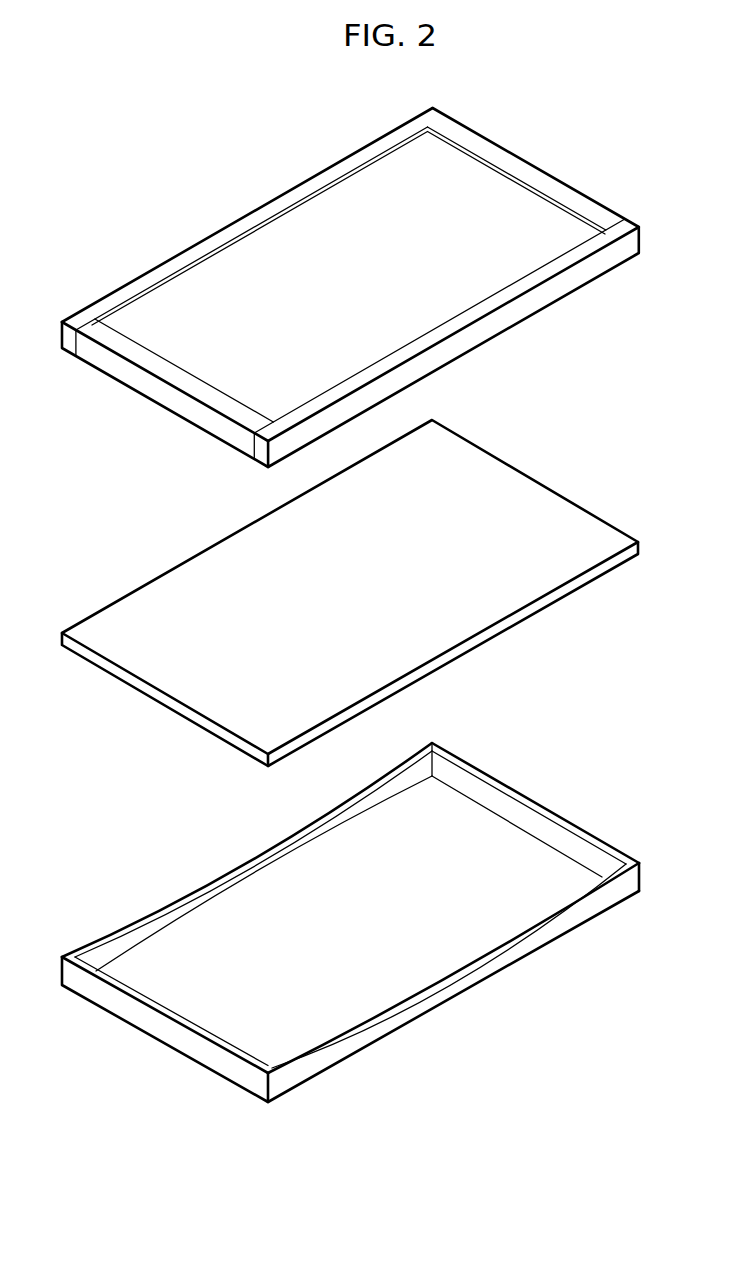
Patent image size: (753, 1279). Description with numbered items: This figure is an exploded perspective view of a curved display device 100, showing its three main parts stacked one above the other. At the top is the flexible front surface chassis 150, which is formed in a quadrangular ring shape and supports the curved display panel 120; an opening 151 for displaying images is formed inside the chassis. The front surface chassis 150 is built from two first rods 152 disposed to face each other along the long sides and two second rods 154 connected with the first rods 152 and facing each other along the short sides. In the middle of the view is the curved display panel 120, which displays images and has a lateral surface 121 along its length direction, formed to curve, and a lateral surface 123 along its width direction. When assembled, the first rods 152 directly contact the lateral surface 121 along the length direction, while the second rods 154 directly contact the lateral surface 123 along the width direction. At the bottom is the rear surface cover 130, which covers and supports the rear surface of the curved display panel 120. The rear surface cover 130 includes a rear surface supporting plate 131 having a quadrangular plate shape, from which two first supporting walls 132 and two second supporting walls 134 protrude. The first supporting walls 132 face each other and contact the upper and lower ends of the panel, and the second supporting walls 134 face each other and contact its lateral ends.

The curved display device 100 is at (572, 142).
The front surface chassis 150 is at (593, 190).
The opening 151 is at (412, 218).
The first rods 152 is at (305, 184).
The second rods 154 is at (467, 135).
The curved display panel 120 is at (510, 485).
The lateral surface 121 is at (177, 565).
The lateral surface 123 is at (150, 692).
The rear surface cover 130 is at (587, 822).
The rear surface supporting plate 131 is at (475, 905).
The first supporting walls 132 is at (140, 934).
The second supporting walls 134 is at (148, 1018).